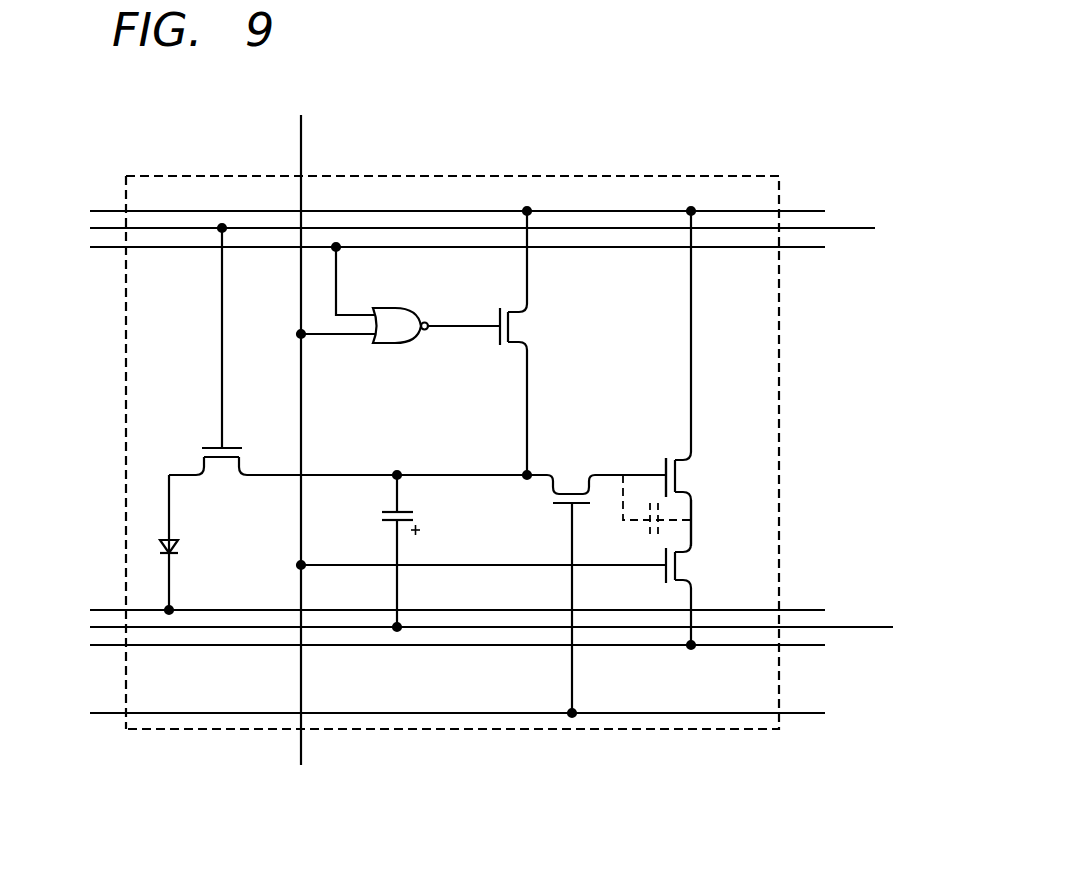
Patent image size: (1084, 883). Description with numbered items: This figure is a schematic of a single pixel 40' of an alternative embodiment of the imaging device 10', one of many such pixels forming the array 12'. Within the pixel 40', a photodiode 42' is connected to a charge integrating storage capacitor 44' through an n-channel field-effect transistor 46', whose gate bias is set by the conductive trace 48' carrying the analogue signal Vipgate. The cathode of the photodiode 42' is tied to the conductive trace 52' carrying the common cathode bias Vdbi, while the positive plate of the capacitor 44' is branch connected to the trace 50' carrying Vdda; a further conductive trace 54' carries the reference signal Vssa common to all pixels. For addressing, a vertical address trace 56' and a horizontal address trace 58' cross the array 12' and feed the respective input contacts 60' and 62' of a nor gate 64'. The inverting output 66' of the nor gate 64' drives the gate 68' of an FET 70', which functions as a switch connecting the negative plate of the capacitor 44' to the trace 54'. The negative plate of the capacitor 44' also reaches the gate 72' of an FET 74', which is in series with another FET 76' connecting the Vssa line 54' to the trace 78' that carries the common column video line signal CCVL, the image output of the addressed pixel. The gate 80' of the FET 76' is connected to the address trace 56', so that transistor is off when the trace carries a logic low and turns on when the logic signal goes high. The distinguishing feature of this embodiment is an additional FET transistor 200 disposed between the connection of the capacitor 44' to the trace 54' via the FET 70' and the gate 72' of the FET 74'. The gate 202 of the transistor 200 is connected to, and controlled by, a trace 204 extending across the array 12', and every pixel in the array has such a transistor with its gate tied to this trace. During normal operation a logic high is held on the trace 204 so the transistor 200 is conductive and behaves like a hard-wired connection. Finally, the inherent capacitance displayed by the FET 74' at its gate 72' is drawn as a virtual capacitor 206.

The imaging device 10' is at (506, 418).
The array 12' is at (94, 452).
The pixel 40' is at (452, 421).
The photodiode 42' is at (217, 544).
The charge integrating storage capacitor 44' is at (442, 551).
The n-channel field-effect transistor 46' is at (358, 349).
The conductive trace 48' is at (517, 261).
The trace 50' is at (482, 577).
The conductive trace 52' is at (517, 596).
The conductive trace 54' is at (487, 175).
The address trace 56' is at (348, 446).
The address trace 58' is at (477, 289).
The input contact 60' is at (336, 356).
The input contact 62' is at (374, 279).
The nor gate 64' is at (423, 311).
The inverting output 66' is at (452, 357).
The gate 68' is at (464, 341).
The FET 70' is at (557, 343).
The gate 72' is at (640, 467).
The FET 74' is at (714, 376).
The FET 76' is at (720, 574).
The trace 78' is at (479, 664).
The gate 80' is at (481, 582).
The FET transistor 200 is at (576, 470).
The gate 202 is at (582, 596).
The trace 204 is at (457, 695).
The virtual capacitor 206 is at (634, 516).